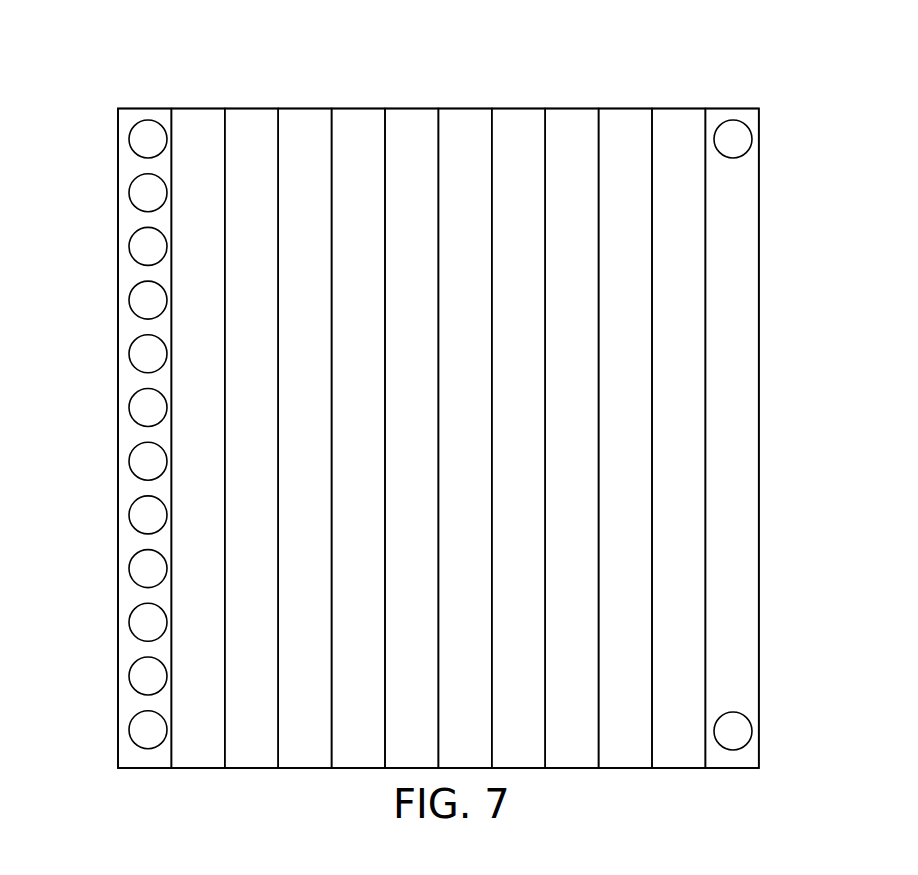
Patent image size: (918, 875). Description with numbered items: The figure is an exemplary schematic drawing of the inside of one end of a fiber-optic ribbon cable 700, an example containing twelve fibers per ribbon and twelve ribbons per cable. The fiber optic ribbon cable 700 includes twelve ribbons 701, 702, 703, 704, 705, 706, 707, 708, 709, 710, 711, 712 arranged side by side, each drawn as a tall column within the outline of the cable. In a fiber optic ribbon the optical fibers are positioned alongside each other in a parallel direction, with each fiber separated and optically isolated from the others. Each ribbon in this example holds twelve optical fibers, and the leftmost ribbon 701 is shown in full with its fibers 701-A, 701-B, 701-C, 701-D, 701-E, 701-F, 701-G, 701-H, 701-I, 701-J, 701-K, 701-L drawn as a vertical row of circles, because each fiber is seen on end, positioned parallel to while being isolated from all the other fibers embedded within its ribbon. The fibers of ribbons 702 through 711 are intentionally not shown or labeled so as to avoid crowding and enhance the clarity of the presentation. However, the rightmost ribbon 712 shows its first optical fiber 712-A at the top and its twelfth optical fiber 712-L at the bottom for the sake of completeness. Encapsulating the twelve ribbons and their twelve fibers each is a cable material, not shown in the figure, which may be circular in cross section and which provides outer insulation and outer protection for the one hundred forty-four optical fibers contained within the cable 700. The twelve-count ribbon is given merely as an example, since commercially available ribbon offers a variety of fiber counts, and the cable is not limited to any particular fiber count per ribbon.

The fiber-optic ribbon cable 700 is at (838, 204).
The ribbon 701 is at (147, 93).
The ribbon 702 is at (200, 93).
The ribbon 703 is at (254, 93).
The ribbon 704 is at (307, 93).
The ribbon 705 is at (360, 93).
The ribbon 706 is at (414, 93).
The ribbon 707 is at (467, 93).
The ribbon 708 is at (520, 93).
The ribbon 709 is at (574, 93).
The ribbon 710 is at (627, 93).
The ribbon 711 is at (681, 93).
The ribbon 712 is at (734, 93).
The optical fiber 701-A is at (129, 140).
The optical fiber 701-B is at (129, 194).
The optical fiber 701-C is at (129, 247).
The optical fiber 701-D is at (129, 301).
The optical fiber 701-E is at (129, 355).
The optical fiber 701-F is at (129, 408).
The optical fiber 701-G is at (129, 462).
The optical fiber 701-H is at (129, 516).
The optical fiber 701-I is at (129, 570).
The optical fiber 701-J is at (129, 623).
The optical fiber 701-K is at (129, 677).
The optical fiber 701-L is at (129, 731).
The first optical fiber 712-A is at (752, 143).
The twelfth optical fiber 712-L is at (752, 735).